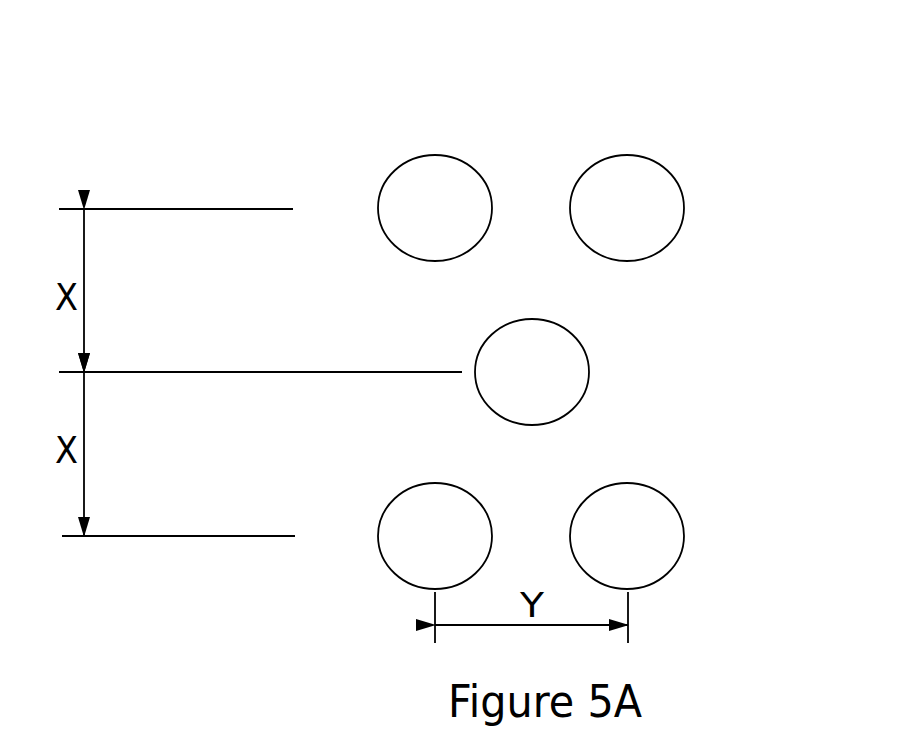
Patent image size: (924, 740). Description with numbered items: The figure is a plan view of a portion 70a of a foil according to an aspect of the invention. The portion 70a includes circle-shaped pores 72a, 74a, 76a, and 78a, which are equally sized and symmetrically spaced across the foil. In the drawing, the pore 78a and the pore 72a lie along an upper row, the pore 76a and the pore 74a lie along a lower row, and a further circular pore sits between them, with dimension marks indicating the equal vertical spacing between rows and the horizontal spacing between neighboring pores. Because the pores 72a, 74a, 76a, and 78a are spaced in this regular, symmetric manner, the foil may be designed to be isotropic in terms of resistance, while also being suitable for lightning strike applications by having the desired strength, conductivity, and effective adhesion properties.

The portion of a foil 70a is at (531, 306).
The circle-shaped pore 72a is at (737, 176).
The circle-shaped pore 74a is at (726, 496).
The circle-shaped pore 76a is at (330, 521).
The circle-shaped pore 78a is at (325, 236).